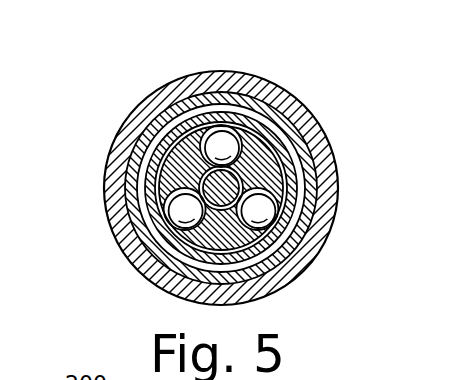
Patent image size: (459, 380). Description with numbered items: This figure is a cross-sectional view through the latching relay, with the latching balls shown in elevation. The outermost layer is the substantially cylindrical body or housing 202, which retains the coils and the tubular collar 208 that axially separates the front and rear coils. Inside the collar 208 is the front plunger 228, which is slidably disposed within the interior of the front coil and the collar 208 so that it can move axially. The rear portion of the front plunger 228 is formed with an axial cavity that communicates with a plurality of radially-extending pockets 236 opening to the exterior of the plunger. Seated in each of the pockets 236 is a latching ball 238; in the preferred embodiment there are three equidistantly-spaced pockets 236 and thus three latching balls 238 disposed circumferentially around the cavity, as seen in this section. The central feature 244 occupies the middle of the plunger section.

The housing 202 is at (261, 147).
The tubular collar 208 is at (254, 188).
The front plunger 228 is at (217, 207).
The pockets 236 is at (229, 141).
The latching ball 238 is at (181, 164).
The central lumen 244 is at (267, 111).